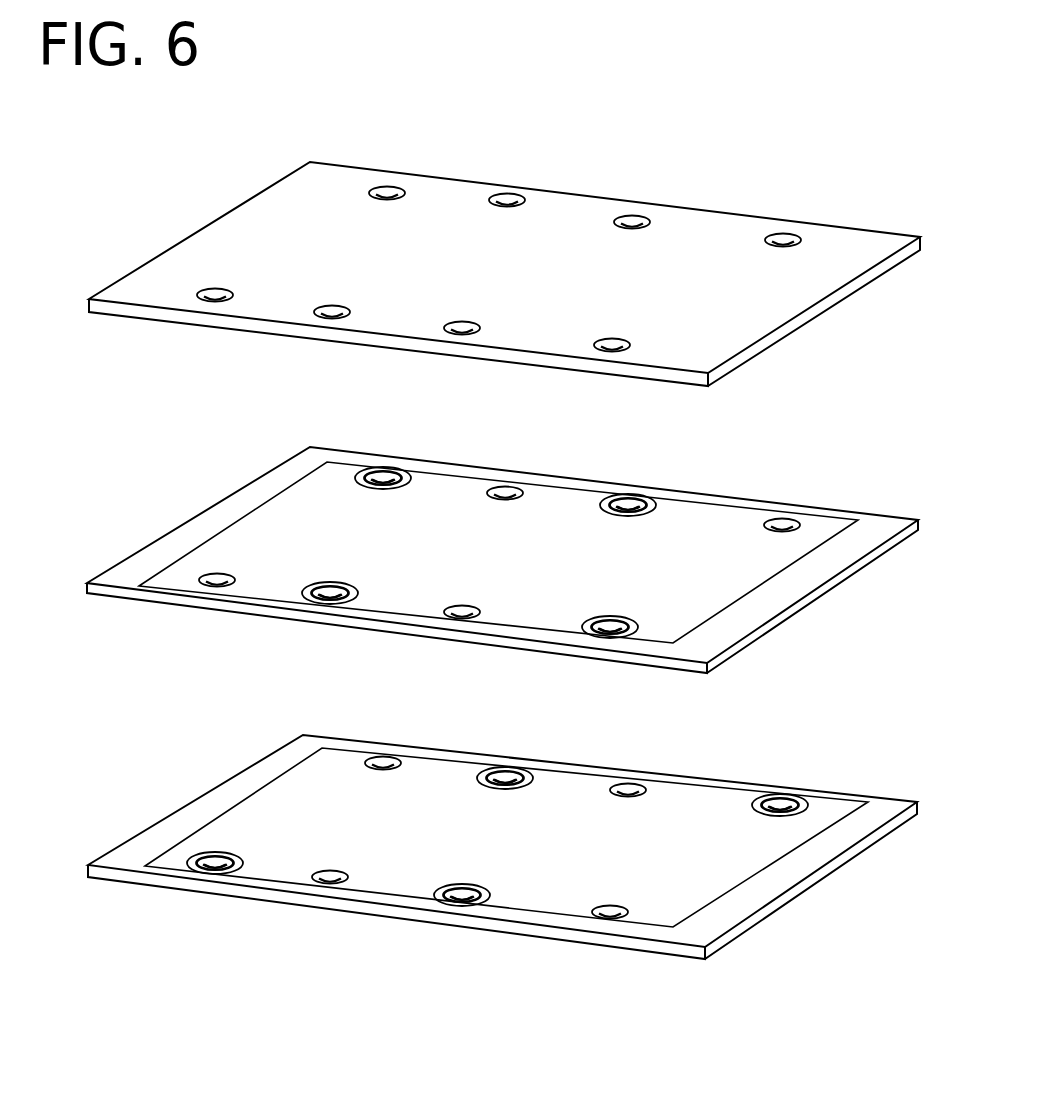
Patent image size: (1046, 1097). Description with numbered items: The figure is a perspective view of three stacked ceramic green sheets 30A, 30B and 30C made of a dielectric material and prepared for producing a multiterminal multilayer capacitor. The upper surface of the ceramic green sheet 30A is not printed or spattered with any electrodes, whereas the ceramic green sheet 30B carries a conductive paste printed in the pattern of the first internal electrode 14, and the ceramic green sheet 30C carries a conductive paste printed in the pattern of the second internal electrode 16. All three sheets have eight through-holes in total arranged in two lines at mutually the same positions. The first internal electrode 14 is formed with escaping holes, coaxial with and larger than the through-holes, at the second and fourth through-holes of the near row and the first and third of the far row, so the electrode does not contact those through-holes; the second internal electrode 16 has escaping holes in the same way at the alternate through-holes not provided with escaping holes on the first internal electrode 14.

The first internal electrode 14 is at (433, 497).
The second internal electrode 16 is at (437, 783).
The ceramic green sheet 30A is at (568, 205).
The ceramic green sheet 30B is at (725, 495).
The ceramic green sheet 30C is at (665, 772).